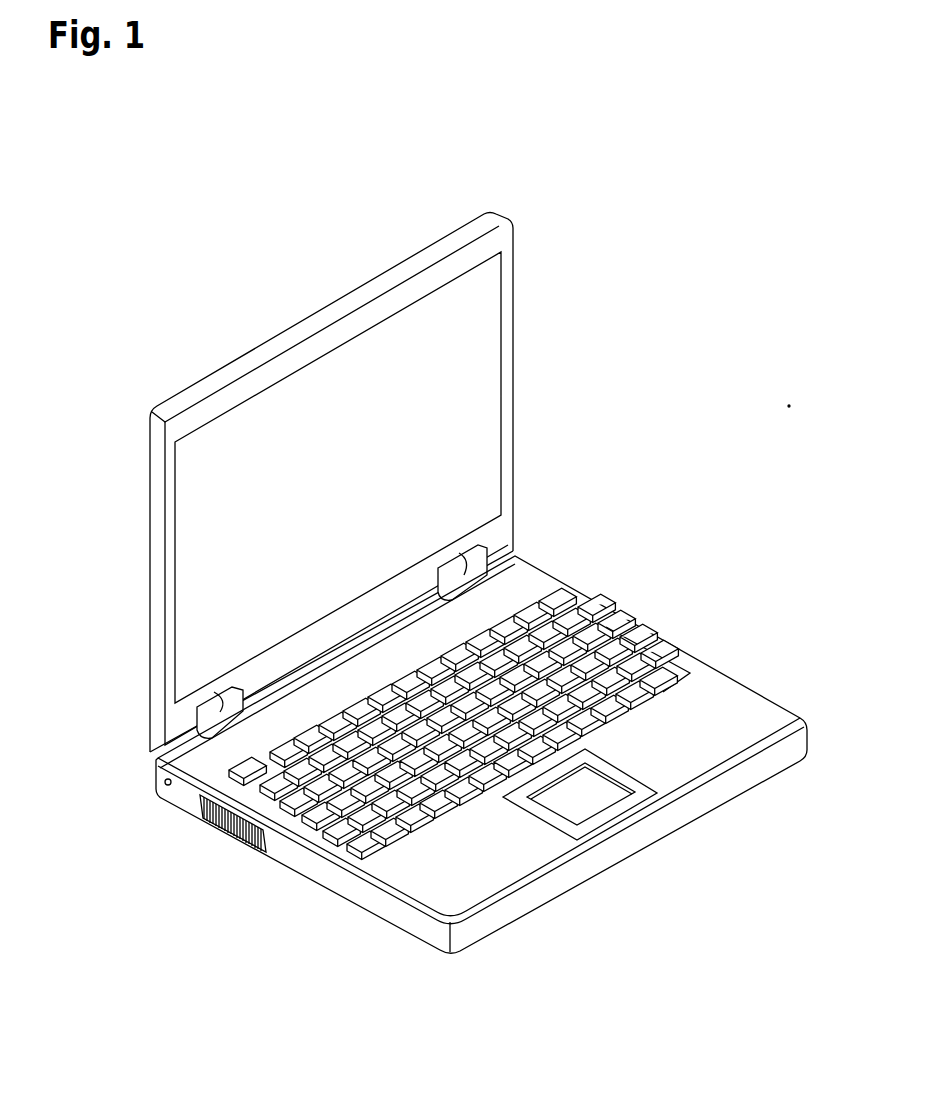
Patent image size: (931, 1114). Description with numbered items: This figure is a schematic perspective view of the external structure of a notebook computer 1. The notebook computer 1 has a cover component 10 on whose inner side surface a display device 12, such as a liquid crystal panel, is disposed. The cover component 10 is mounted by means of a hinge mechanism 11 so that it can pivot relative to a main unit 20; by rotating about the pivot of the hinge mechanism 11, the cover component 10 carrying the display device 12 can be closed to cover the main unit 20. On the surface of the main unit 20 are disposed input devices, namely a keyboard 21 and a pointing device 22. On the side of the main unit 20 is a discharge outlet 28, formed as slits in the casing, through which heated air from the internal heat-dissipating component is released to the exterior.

The notebook computer 1 is at (172, 240).
The cover component 10 is at (222, 370).
The hinge mechanism 11 is at (222, 712).
The display device 12 is at (488, 424).
The main unit 20 is at (742, 678).
The keyboard 21 is at (567, 648).
The pointing device 22 is at (600, 802).
The discharge outlet 28 is at (222, 836).